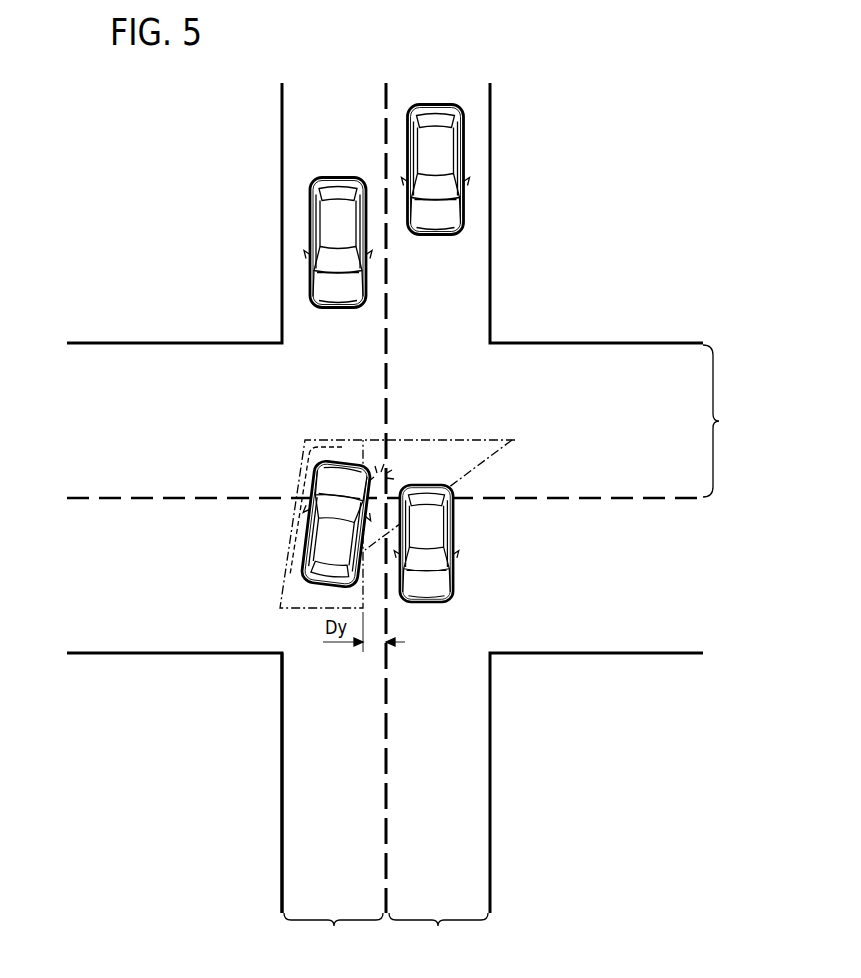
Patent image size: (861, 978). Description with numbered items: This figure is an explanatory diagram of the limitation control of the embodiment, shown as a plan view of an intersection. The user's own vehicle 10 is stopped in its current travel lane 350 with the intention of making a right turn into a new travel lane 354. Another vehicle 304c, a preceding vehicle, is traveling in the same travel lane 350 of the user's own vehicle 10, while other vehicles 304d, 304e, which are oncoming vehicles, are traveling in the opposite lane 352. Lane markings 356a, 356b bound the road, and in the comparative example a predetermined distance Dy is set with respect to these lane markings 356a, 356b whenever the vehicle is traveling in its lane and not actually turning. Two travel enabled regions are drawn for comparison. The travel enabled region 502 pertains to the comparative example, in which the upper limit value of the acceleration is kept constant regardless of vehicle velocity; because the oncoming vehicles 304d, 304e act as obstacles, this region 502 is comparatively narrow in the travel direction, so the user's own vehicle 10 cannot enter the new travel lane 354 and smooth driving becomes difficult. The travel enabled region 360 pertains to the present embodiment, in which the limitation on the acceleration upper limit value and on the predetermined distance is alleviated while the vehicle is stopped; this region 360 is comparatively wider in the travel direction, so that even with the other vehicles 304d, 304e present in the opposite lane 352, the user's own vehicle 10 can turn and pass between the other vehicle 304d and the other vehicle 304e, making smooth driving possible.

The user's own vehicle 10 is at (328, 547).
The other vehicle (preceding vehicle) 304c is at (312, 208).
The other vehicle (oncoming vehicle) 304d is at (427, 595).
The other vehicle (oncoming vehicle) 304e is at (440, 160).
The travel lane 350 is at (333, 930).
The opposite lane 352 is at (438, 930).
The new travel lane 354 is at (728, 421).
The lane marking 356a is at (282, 806).
The lane marking 356b is at (386, 786).
The travel enabled region 360 is at (481, 465).
The travel enabled region 502 is at (303, 457).